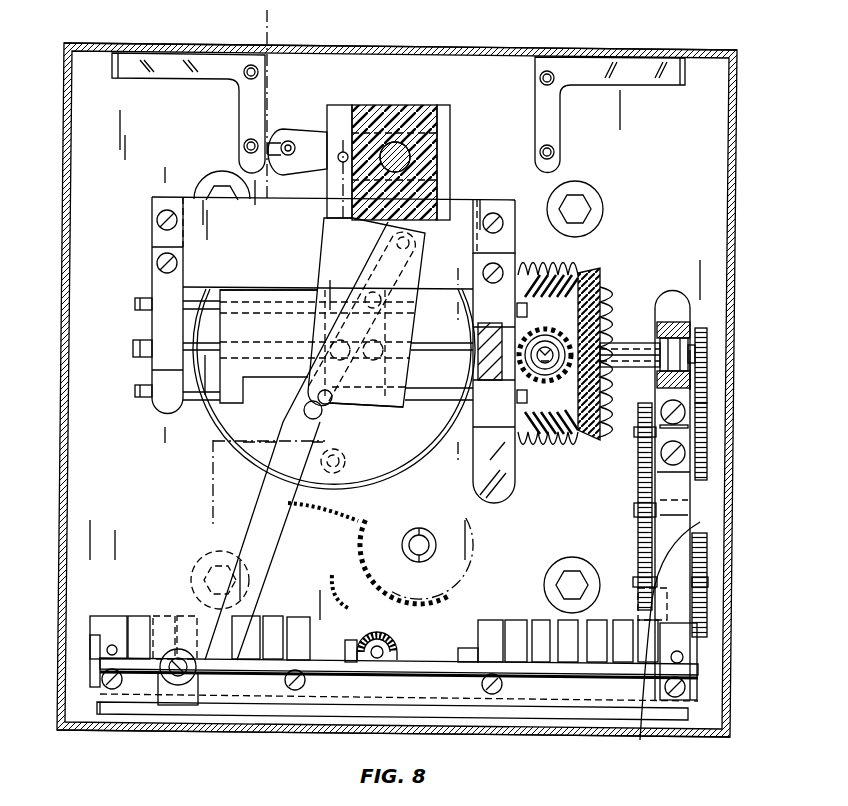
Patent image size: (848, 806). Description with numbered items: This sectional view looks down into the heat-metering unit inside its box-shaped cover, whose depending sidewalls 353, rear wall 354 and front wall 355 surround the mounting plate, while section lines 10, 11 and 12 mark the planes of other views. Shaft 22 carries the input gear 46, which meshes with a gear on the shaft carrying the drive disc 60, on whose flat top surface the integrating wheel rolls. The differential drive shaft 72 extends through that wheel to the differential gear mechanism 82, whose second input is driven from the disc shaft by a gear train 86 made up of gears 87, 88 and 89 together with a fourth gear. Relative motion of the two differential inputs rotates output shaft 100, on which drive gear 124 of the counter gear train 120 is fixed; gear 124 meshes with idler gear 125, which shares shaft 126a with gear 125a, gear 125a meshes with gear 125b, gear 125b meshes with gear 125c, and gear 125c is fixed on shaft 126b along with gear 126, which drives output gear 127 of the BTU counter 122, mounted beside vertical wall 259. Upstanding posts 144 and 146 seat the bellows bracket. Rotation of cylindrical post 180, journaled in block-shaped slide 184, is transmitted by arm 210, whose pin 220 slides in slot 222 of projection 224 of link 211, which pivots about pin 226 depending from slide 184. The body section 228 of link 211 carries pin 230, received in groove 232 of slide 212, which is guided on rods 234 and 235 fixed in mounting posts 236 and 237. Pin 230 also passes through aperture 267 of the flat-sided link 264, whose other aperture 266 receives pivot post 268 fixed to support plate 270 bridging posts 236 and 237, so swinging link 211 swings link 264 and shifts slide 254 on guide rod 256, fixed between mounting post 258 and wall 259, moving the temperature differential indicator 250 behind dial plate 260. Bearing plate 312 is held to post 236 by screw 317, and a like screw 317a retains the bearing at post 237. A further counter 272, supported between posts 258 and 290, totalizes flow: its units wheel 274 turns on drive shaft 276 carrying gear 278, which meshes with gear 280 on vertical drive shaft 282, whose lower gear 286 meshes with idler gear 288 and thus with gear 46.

The section line 10- 10 is at (295, 23).
The section line 11- 11 is at (195, 175).
The section line 12- 12 is at (474, 276).
The shaft 22 is at (345, 461).
The input gear 46 is at (366, 553).
The drive disc 60 is at (223, 448).
The differential drive shaft 72 is at (423, 360).
The differential gear mechanism 82 is at (570, 272).
The gear train 86 is at (605, 268).
The gear 87 is at (590, 437).
The gear 88 is at (547, 447).
The gear 89 is at (530, 467).
The output shaft 100 is at (655, 337).
The counter gear train 120 is at (714, 499).
The BTU counter 122 is at (517, 616).
The drive gear 124 is at (708, 342).
The idler gear 125 is at (708, 457).
The idler gear 125a is at (642, 442).
The idler gear 125b is at (640, 480).
The idler gear 125c is at (638, 570).
The idler gear 126 is at (708, 562).
The shaft 126a is at (690, 421).
The shaft 126b is at (640, 613).
The output gear 127 is at (703, 675).
The post 144 is at (267, 77).
The post 146 is at (528, 78).
The cylindrical post 180 is at (397, 143).
The slide 184 is at (427, 107).
The arm 210 is at (373, 133).
The link 211 is at (318, 231).
The slide 212 is at (240, 290).
The pin 220 is at (288, 141).
The slot 222 is at (265, 140).
The projection 224 is at (327, 110).
The pin 226 is at (356, 221).
The body section 228 is at (405, 328).
The pin 230 is at (303, 394).
The groove 232 is at (317, 330).
The rod 234 is at (432, 403).
The rod 235 is at (205, 300).
The mounting post 236 is at (160, 385).
The mounting post 237 is at (475, 450).
The temperature differential indicator 250 is at (175, 702).
The slide 254 is at (215, 704).
The guide rod 256 is at (460, 655).
The mounting post 258 is at (88, 652).
The vertical wall 259 is at (702, 521).
The dial plate 260 is at (503, 710).
The link 264 is at (267, 537).
The aperture 266 is at (477, 265).
The aperture 267 is at (283, 429).
The pivot post 268 is at (417, 240).
The support plate 270 is at (472, 200).
The counter 272 is at (252, 614).
The units wheel 274 is at (272, 640).
The units wheel drive shaft 276 is at (350, 640).
The gear 278 is at (330, 700).
The gear 280 is at (427, 680).
The drive shaft 282 is at (380, 648).
The gear 286 is at (348, 608).
The idler gear 288 is at (445, 600).
The mounting post 290 is at (290, 643).
The bearing plate 312 is at (160, 325).
The screw 317 is at (158, 262).
The screw 317a is at (498, 257).
The sidewalls 353 is at (737, 155).
The rear wall 354 is at (575, 50).
The front wall 355 is at (90, 725).